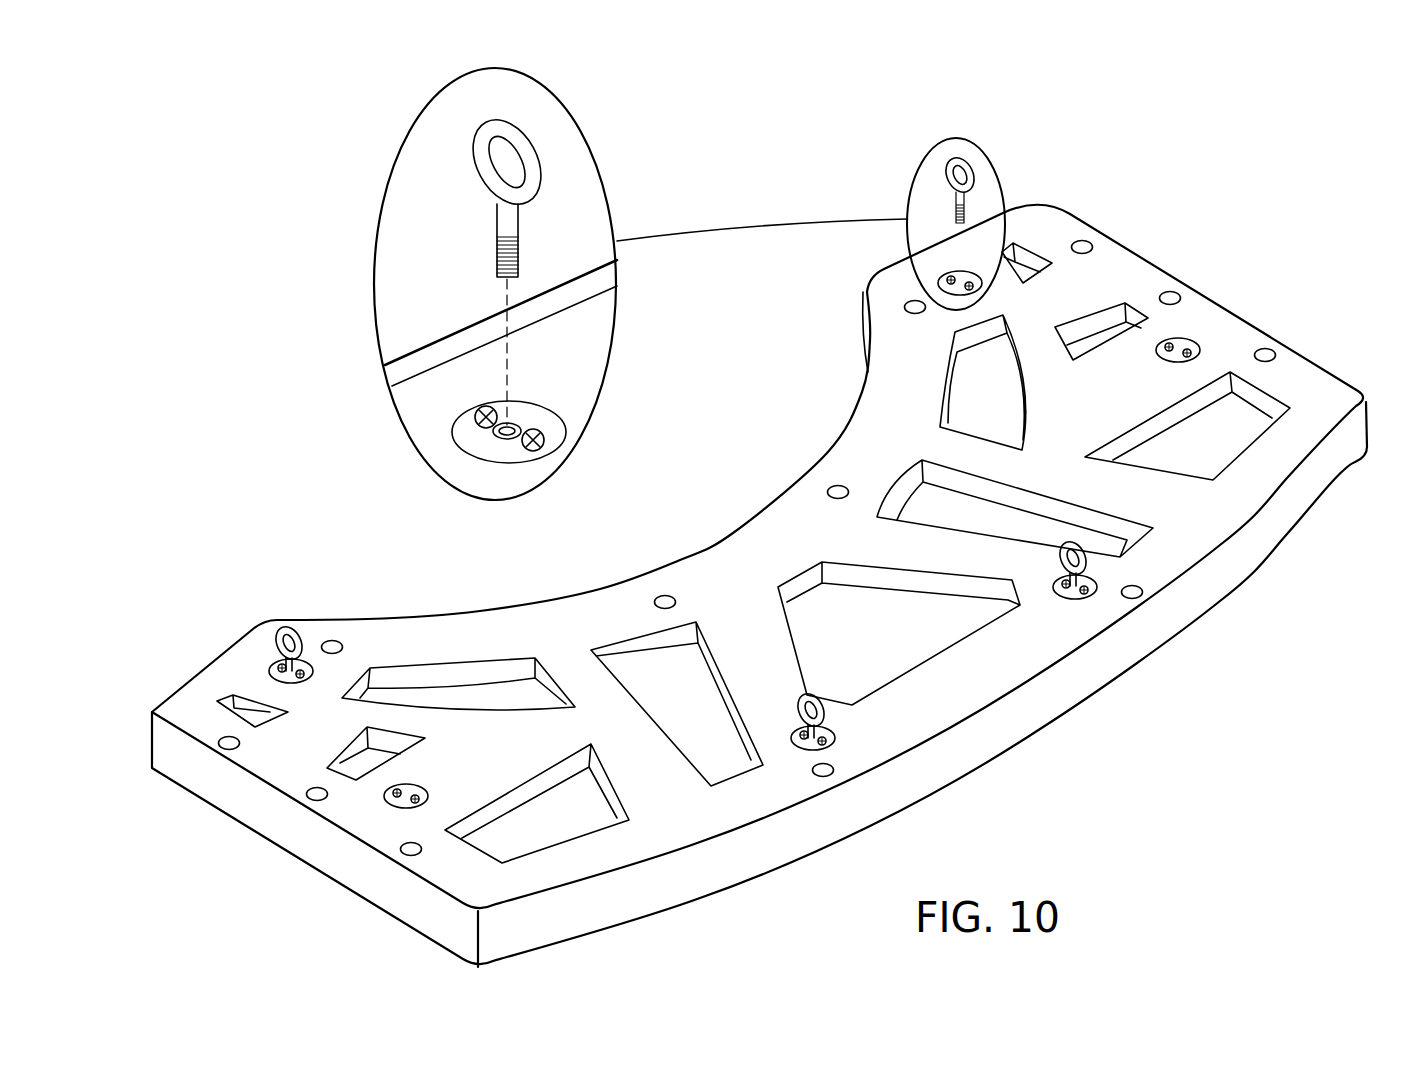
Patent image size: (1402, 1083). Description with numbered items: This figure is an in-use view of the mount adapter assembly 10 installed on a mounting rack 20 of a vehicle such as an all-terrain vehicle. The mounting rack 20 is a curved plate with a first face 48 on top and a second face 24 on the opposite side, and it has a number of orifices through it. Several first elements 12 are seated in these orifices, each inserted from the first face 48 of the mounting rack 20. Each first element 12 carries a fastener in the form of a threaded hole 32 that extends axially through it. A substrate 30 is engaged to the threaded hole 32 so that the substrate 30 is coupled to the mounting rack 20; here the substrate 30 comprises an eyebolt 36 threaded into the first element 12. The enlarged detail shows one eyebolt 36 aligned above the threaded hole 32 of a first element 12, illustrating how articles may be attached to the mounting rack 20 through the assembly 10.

The mount adapter assembly 10 is at (1208, 176).
The first element 12 is at (398, 805).
The mounting rack 20 is at (1335, 387).
The second face 24 is at (679, 909).
The substrate 30 is at (288, 632).
The threaded hole 32 is at (504, 431).
The eyebolt 36 is at (1080, 545).
The first face 48 is at (687, 823).